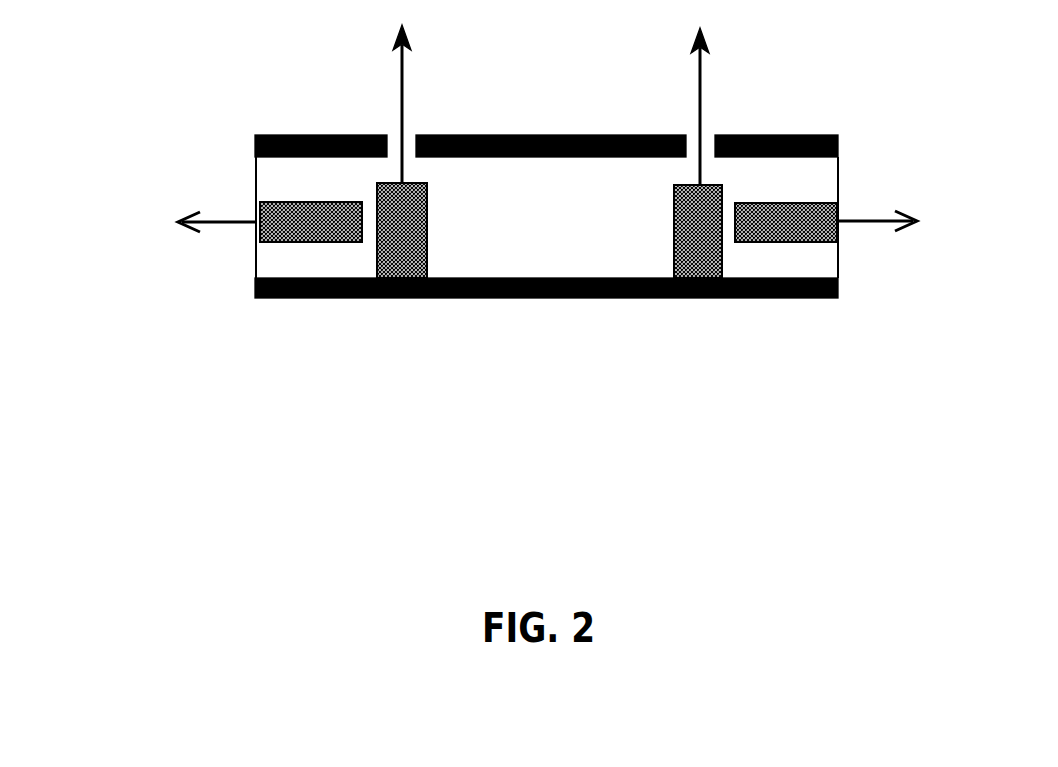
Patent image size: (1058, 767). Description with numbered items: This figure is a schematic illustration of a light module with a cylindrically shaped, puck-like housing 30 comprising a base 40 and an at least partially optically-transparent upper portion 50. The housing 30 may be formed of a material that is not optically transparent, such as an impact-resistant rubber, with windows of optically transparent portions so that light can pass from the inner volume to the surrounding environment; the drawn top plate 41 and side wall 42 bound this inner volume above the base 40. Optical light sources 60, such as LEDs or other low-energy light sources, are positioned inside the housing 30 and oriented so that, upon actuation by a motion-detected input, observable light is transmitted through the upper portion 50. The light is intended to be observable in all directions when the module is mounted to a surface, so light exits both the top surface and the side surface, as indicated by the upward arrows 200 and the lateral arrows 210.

The housing 30 is at (838, 257).
The base 40 is at (483, 298).
The top plate 41 is at (540, 135).
The side wall 42 is at (255, 263).
The upper portion 50 is at (243, 195).
The optical light sources 60 is at (686, 270).
The arrow 200 is at (399, 86).
The arrow 210 is at (178, 226).